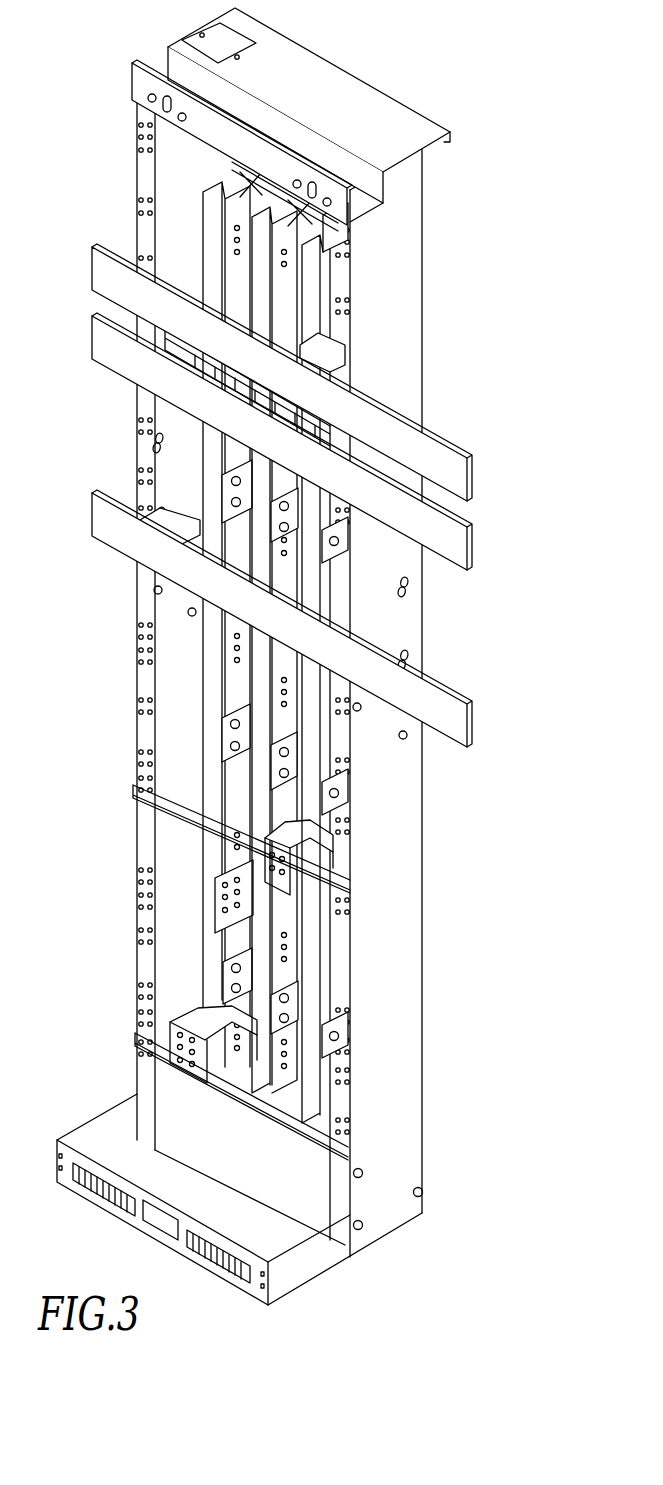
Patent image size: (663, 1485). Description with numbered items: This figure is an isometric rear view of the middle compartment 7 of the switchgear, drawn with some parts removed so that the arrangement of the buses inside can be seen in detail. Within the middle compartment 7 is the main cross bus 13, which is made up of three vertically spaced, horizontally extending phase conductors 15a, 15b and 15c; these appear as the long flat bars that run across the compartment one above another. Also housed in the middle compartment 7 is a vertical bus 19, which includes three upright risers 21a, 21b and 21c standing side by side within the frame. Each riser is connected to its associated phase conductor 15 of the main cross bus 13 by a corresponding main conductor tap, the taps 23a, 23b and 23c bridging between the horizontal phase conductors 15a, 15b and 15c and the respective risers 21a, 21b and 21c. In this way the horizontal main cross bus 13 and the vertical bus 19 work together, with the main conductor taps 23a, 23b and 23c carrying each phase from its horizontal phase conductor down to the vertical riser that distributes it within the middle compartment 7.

The middle compartment 7 is at (354, 93).
The main cross bus 13 is at (472, 424).
The phase conductor 15 is at (321, 504).
The phase conductor 15a is at (452, 470).
The phase conductor 15b is at (452, 538).
The phase conductor 15c is at (452, 712).
The vertical bus 19 is at (242, 642).
The riser 21a is at (313, 742).
The riser 21b is at (263, 807).
The riser 21c is at (212, 750).
The main conductor tap 23a is at (322, 363).
The main conductor tap 23b is at (207, 360).
The main conductor tap 23c is at (177, 523).